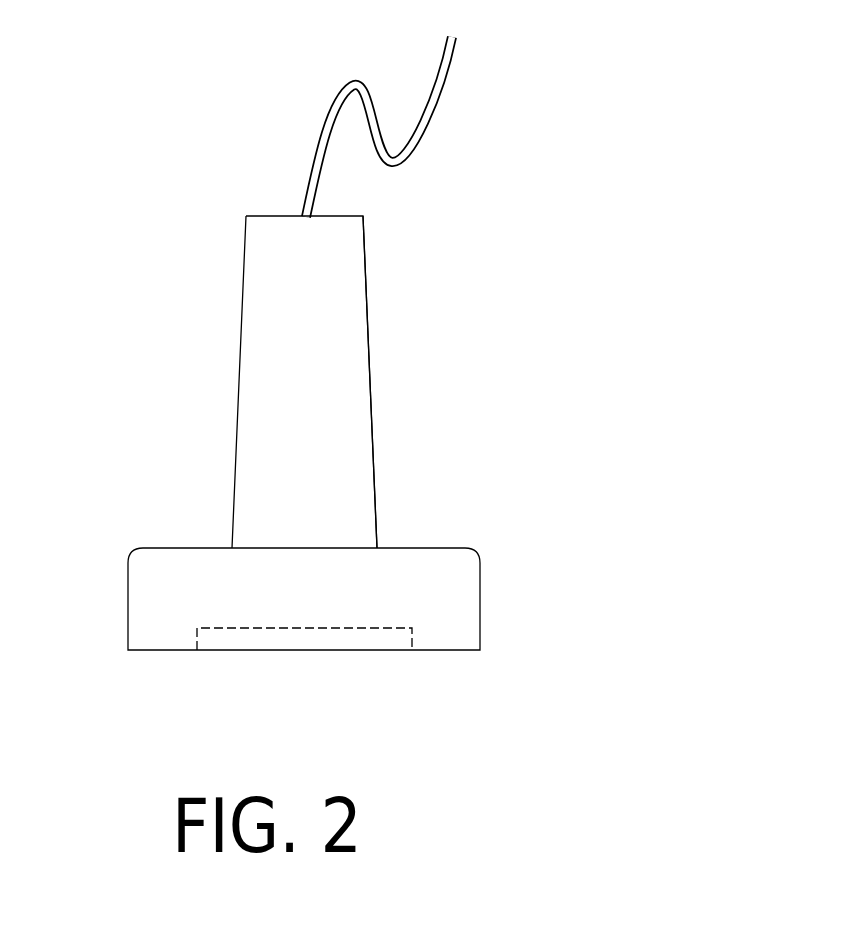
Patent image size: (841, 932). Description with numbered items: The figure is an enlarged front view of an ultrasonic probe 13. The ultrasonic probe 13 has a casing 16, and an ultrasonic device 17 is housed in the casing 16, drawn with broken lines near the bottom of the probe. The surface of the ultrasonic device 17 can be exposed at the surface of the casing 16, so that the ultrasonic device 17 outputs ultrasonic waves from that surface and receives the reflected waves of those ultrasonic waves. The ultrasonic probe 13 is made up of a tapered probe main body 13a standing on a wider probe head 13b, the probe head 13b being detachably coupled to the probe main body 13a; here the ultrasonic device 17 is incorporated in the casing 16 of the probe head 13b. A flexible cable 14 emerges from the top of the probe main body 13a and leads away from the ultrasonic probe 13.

The ultrasonic probe 13 is at (251, 444).
The probe main body 13a is at (242, 304).
The probe head 13b is at (128, 600).
The cable 14 is at (454, 80).
The casing 16 is at (372, 367).
The ultrasonic device 17 is at (305, 642).